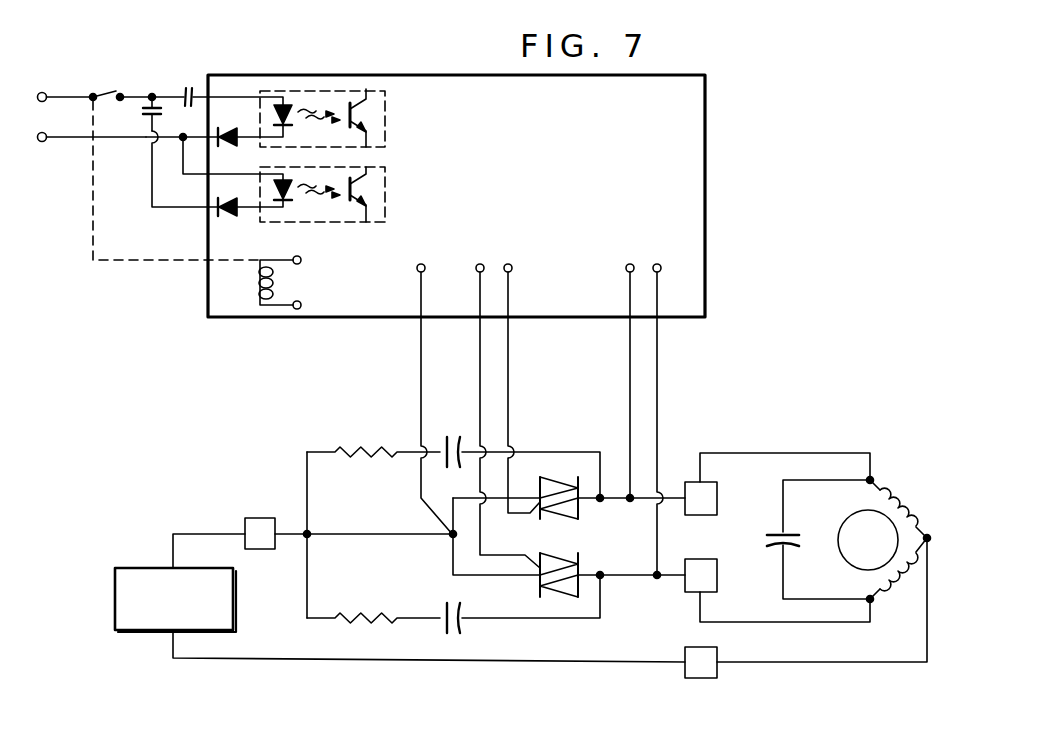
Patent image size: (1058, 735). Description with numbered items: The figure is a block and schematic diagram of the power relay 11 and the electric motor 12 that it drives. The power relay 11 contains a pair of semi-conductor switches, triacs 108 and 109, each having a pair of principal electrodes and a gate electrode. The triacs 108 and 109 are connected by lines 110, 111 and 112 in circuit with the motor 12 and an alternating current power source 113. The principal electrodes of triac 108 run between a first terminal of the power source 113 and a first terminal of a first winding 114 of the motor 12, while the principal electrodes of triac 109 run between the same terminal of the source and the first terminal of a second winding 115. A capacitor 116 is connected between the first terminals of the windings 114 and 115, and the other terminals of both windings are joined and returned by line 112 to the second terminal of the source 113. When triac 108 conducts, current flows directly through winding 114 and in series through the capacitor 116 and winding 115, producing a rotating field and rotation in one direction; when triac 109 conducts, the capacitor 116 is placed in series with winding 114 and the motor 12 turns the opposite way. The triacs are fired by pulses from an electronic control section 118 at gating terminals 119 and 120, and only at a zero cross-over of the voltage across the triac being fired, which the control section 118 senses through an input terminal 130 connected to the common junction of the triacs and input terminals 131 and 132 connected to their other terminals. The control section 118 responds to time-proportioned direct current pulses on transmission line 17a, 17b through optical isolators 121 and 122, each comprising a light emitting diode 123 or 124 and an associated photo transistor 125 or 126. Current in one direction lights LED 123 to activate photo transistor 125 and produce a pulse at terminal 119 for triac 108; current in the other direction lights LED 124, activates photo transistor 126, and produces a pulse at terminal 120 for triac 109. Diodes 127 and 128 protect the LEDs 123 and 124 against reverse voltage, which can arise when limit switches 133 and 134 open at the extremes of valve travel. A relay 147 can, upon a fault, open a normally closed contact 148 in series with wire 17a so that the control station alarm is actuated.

The power relay 11 is at (790, 280).
The motor 12 is at (930, 537).
The transmission line 17a is at (75, 94).
The transmission line 17b is at (75, 141).
The triac 108 is at (578, 572).
The triac 109 is at (578, 510).
The line 110 is at (810, 453).
The line 111 is at (808, 622).
The line 112 is at (565, 663).
The power source 113 is at (233, 614).
The first winding 114 is at (895, 596).
The second winding 115 is at (897, 490).
The capacitor 116 is at (774, 529).
The electronic control section 118 is at (705, 203).
The gating terminal 119 is at (481, 263).
The gating terminal 120 is at (540, 245).
The optical isolator 121 is at (308, 91).
The optical isolator 122 is at (385, 213).
The light emitting diode 123 is at (283, 102).
The light emitting diode 124 is at (291, 208).
The photo transistor 125 is at (366, 115).
The photo transistor 126 is at (372, 192).
The diode 127 is at (214, 127).
The diode 128 is at (226, 218).
The input terminal 130 is at (427, 245).
The input terminal 131 is at (656, 263).
The input terminal 132 is at (628, 263).
The limit switch 133 is at (188, 87).
The limit switch 134 is at (148, 112).
The relay 147 is at (275, 290).
The normally closed contact 148 is at (101, 88).